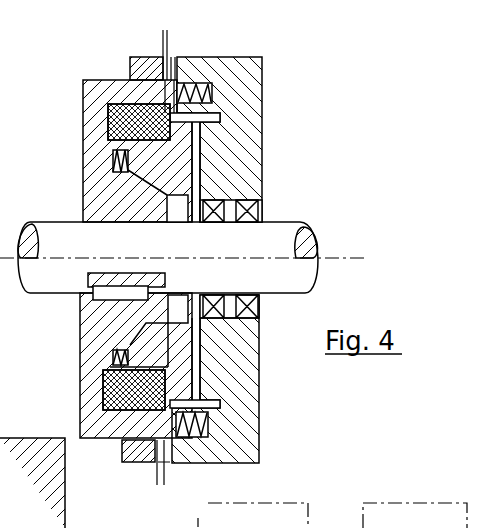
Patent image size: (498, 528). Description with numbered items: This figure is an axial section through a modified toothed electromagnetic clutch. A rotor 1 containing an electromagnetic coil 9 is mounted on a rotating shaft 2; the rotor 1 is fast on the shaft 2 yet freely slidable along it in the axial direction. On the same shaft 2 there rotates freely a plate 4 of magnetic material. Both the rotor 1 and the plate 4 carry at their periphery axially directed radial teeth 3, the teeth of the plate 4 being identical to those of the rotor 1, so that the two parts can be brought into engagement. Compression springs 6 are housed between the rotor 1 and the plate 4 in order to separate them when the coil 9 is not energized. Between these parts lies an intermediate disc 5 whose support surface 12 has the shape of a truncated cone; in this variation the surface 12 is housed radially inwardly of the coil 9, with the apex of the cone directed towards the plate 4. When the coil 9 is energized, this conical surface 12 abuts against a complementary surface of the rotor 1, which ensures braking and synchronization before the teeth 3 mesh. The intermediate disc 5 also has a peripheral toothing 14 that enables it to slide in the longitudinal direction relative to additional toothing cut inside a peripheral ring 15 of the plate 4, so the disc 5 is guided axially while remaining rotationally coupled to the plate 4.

The rotor 1 is at (105, 163).
The rotating shaft 2 is at (40, 276).
The teeth 3 is at (165, 60).
The plate 4 is at (233, 148).
The intermediate disc 5 is at (177, 365).
The compression springs 6 is at (187, 433).
The electromagnetic coil 9 is at (120, 393).
The truncated-cone surface 12 is at (133, 342).
The peripheral toothing 14 is at (175, 400).
The peripheral ring 15 is at (25, 465).